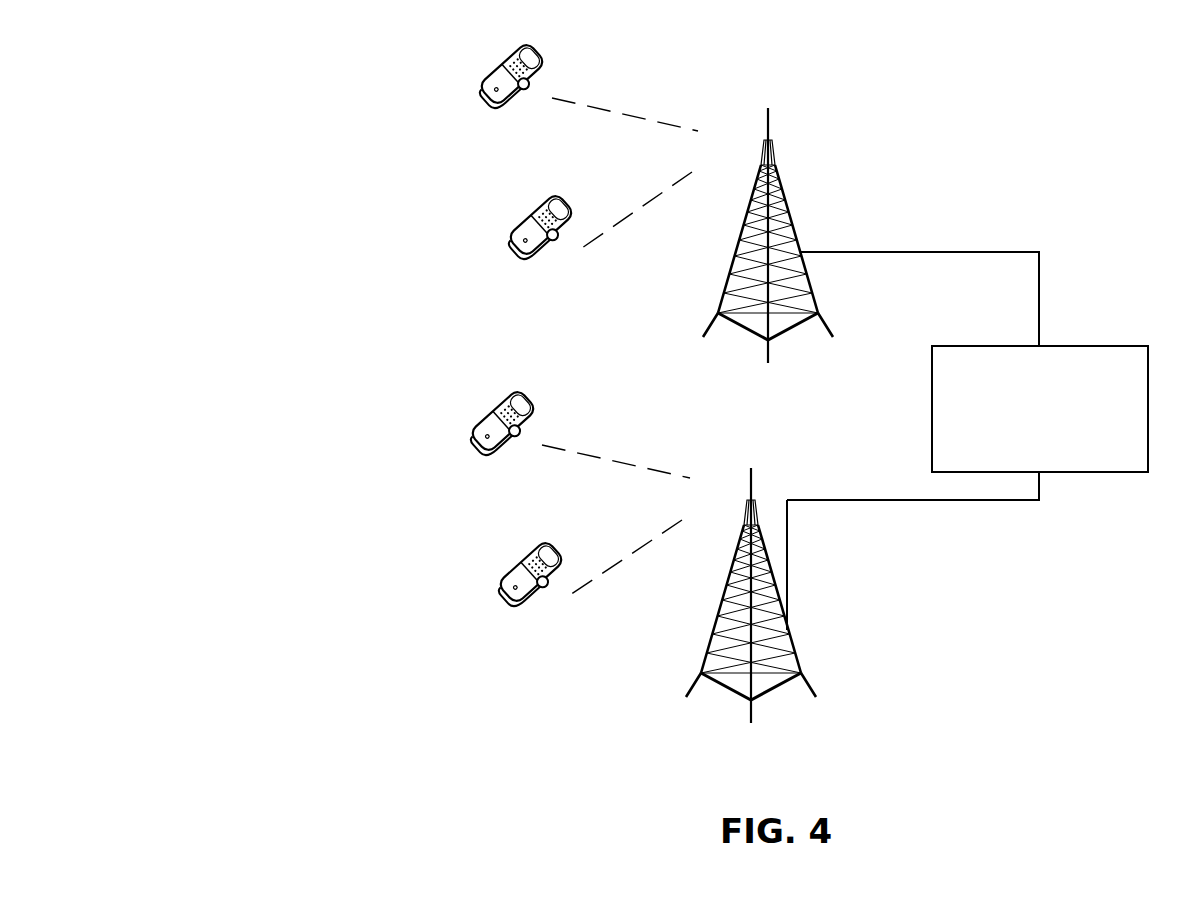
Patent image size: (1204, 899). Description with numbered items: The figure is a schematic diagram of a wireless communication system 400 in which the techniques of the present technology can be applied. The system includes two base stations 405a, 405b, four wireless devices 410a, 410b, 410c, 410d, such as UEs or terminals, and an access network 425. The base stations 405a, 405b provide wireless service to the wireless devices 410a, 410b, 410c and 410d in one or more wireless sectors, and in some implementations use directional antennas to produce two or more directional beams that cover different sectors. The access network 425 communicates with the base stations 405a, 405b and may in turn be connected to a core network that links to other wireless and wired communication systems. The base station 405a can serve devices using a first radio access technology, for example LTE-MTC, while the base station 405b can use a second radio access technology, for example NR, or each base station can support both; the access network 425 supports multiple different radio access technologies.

The wireless communication system 400 is at (232, 91).
The wireless device 410a is at (508, 48).
The wireless device 410b is at (537, 198).
The wireless device 410c is at (499, 395).
The wireless device 410d is at (527, 545).
The base station 405a is at (782, 191).
The base station 405b is at (752, 494).
The access network 425 is at (948, 345).